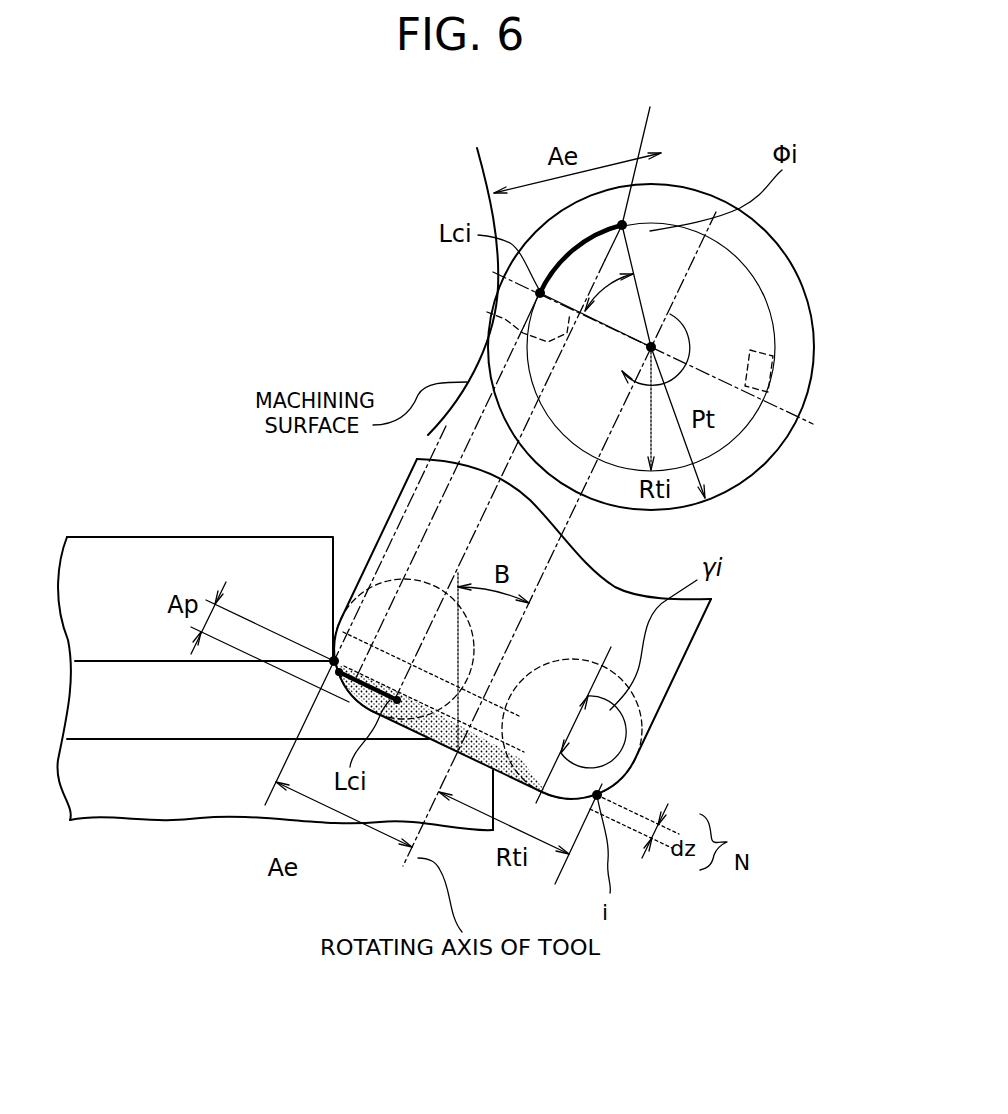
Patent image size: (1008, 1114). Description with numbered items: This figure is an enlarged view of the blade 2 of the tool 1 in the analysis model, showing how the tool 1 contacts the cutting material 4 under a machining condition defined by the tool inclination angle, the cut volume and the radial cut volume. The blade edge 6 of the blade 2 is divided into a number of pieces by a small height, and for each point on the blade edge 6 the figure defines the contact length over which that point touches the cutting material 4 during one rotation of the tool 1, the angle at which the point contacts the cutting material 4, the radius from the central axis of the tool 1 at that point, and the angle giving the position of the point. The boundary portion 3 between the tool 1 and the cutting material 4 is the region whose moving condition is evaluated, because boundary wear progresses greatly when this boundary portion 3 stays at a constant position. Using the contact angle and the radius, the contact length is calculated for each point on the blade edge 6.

The tool 1 is at (790, 276).
The blade 2 is at (795, 367).
The boundary portion 3 is at (333, 658).
The cutting material 4 is at (146, 550).
The blade edge 6 is at (597, 795).